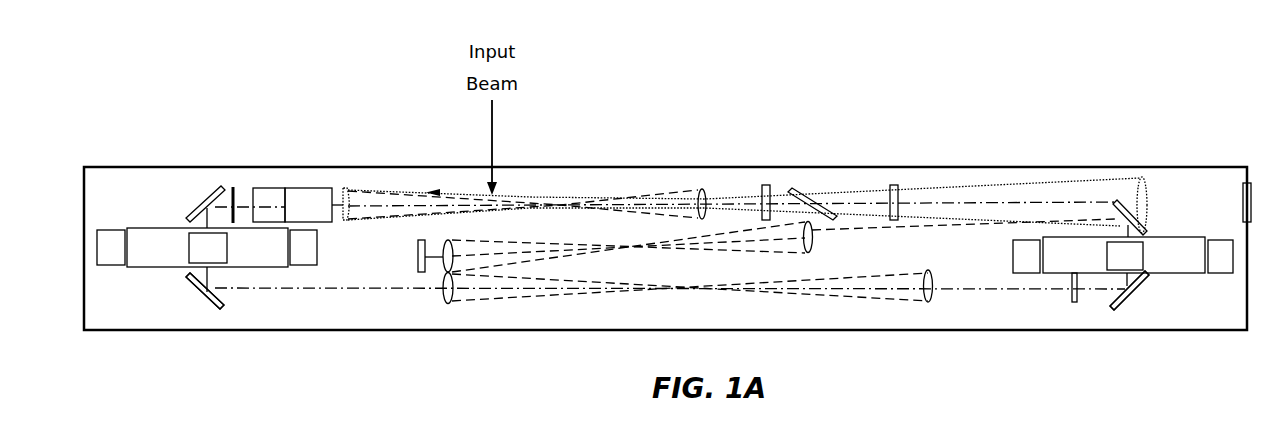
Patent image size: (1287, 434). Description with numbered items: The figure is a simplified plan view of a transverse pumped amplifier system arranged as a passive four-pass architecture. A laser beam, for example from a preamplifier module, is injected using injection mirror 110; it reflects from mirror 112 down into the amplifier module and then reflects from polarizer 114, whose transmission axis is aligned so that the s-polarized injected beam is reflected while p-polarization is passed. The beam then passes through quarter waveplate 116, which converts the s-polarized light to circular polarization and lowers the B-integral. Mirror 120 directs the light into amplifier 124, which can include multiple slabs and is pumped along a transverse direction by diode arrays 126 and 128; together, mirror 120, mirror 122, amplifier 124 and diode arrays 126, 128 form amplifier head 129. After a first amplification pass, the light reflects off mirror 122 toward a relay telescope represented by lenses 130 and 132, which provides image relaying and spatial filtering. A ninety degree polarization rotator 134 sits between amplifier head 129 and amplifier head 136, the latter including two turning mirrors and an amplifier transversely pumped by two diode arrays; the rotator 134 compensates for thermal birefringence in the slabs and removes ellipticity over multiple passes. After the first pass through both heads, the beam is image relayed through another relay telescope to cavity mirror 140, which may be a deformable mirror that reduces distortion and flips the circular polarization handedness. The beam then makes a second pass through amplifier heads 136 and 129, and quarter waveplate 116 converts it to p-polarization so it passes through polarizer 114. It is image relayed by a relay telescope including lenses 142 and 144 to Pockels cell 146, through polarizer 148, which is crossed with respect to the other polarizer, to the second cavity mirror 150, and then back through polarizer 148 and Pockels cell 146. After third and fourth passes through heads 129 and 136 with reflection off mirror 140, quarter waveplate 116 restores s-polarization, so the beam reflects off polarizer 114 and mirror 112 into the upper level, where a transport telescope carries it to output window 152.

The injection mirror 110 is at (497, 192).
The mirror 112 is at (316, 188).
The polarizer 114 is at (267, 188).
The quarter waveplate 116 is at (233, 187).
The mirror 120 is at (208, 189).
The mirror 122 is at (205, 298).
The amplifier 124 is at (218, 265).
The diode array 126 is at (118, 248).
The diode array 128 is at (303, 250).
The amplifier head 129 is at (214, 320).
The lens 130 is at (449, 303).
The lens 132 is at (932, 304).
The 90° polarization rotator 134 is at (1074, 303).
The amplifier head 136 is at (1126, 320).
The cavity mirror 140 is at (420, 272).
The lens 142 is at (346, 190).
The lens 144 is at (692, 190).
The Pockels cell 146 is at (768, 185).
The polarizer 148 is at (802, 190).
The second cavity mirror 150 is at (893, 185).
The output window 152 is at (1243, 200).